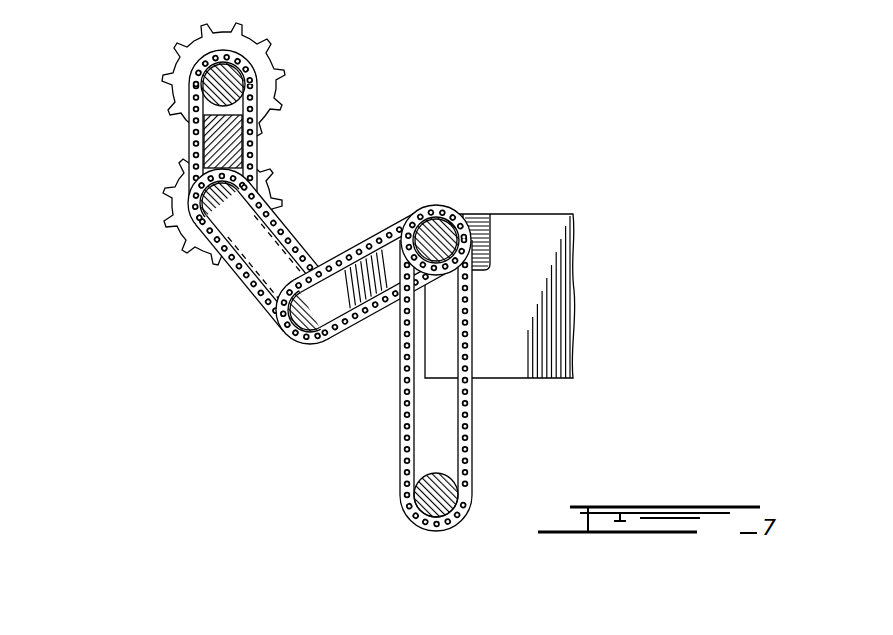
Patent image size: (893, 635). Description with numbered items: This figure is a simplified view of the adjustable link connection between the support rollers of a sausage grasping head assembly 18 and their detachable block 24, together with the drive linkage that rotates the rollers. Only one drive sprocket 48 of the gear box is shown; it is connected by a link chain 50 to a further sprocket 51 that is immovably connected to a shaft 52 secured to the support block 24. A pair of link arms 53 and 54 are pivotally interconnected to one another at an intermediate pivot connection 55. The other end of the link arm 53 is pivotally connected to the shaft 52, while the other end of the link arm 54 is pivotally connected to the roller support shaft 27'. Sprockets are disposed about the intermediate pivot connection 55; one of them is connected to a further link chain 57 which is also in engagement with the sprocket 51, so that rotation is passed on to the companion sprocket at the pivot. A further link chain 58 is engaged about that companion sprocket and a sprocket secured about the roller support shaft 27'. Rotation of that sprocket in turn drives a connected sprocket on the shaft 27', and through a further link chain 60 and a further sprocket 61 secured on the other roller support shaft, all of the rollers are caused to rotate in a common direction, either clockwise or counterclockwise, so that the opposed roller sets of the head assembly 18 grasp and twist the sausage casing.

The sausage grasping head assembly 18 is at (148, 74).
The further sprocket 61 is at (260, 70).
The further link chain 60 is at (190, 134).
The roller support shaft 27' is at (182, 225).
The link arm 54 is at (247, 282).
The further link chain 58 is at (274, 257).
The further link chain 57 is at (372, 235).
The shaft 52 is at (452, 213).
The detachable block 24 is at (553, 242).
The further sprocket 51 is at (466, 270).
The link arm 53 is at (383, 316).
The intermediate pivot connection 55 is at (295, 348).
The link chain 50 is at (467, 412).
The drive sprocket 48 is at (458, 488).